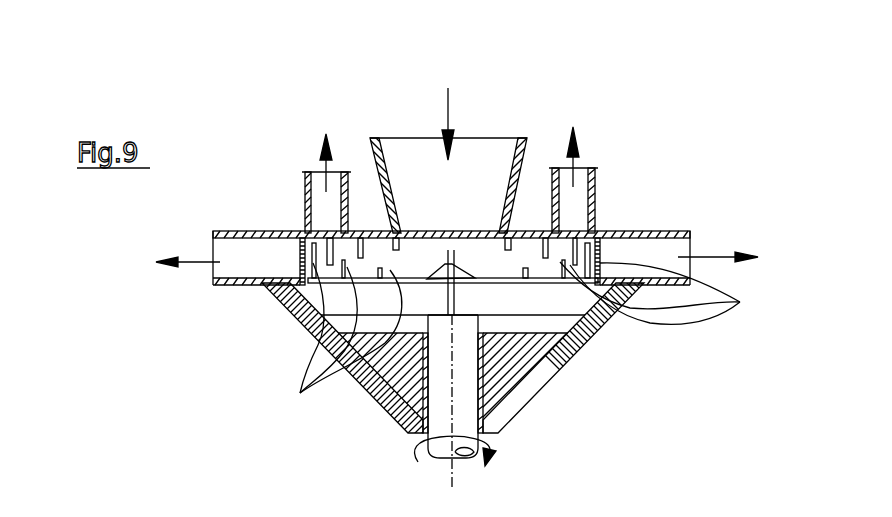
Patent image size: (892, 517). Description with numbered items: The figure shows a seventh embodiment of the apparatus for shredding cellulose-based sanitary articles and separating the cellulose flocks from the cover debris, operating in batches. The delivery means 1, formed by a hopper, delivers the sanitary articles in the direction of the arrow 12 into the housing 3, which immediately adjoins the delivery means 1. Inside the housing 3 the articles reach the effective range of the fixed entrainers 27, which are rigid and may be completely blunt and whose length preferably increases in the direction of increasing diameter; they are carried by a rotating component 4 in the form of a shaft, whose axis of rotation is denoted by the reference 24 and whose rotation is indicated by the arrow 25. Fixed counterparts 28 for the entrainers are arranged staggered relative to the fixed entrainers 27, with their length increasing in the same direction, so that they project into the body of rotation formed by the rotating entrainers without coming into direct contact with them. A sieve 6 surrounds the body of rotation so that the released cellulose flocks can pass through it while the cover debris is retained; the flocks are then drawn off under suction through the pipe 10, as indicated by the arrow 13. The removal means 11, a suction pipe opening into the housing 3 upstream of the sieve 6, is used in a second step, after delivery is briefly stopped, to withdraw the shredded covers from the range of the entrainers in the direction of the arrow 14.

The delivery means 1 is at (412, 150).
The housing 3 is at (528, 233).
The rotating component 4 is at (517, 281).
The sieve 6 is at (300, 238).
The pipe 10 is at (237, 286).
The removal means 11 is at (316, 172).
The arrow 12 is at (448, 100).
The arrow 13 is at (203, 262).
The arrow 14 is at (309, 172).
The axis of rotation 24 is at (453, 482).
The arrow 25 is at (420, 440).
The fixed entrainers 27 is at (300, 393).
The counterparts 28 is at (352, 236).